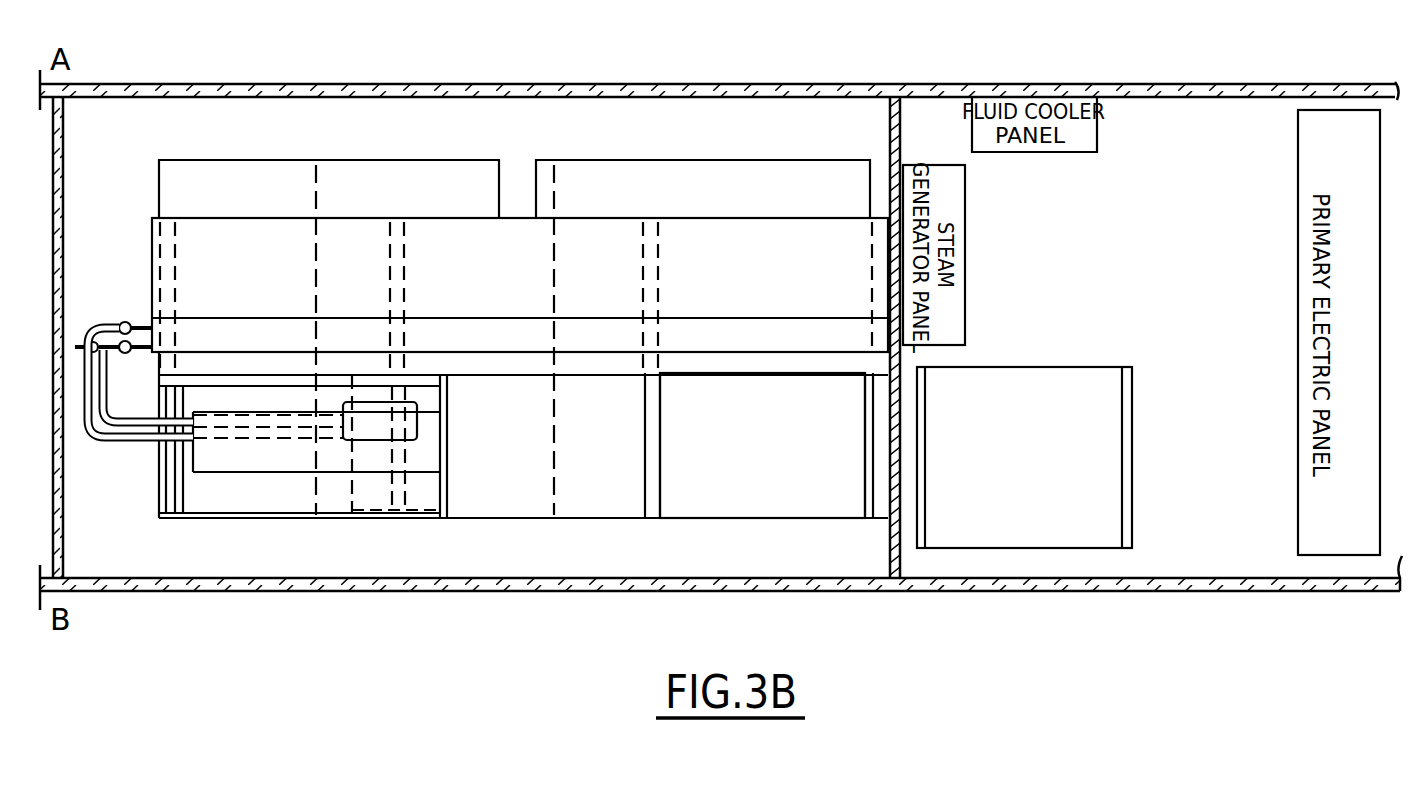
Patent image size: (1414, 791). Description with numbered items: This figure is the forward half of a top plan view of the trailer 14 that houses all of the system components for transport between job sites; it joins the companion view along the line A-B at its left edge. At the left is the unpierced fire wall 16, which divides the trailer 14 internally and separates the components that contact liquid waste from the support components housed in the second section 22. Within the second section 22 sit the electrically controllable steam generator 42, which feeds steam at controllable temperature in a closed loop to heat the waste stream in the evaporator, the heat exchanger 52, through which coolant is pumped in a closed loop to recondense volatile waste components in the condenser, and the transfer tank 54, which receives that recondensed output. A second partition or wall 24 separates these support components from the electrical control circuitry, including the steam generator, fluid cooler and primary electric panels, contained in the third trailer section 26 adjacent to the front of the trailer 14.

The trailer 14 is at (444, 92).
The fire wall 16 is at (64, 158).
The second section 22 is at (300, 108).
The second partition 24 is at (890, 117).
The third trailer section 26 is at (1320, 100).
The steam generator 42 is at (1078, 372).
The heat exchanger 52 is at (833, 510).
The transfer tank 54 is at (513, 222).